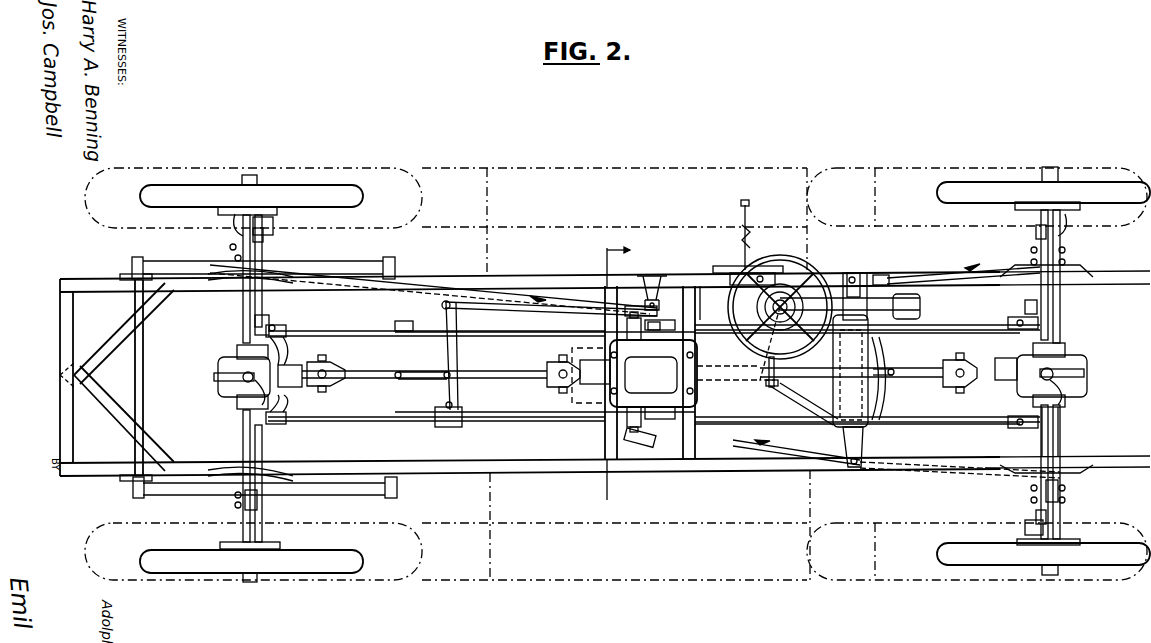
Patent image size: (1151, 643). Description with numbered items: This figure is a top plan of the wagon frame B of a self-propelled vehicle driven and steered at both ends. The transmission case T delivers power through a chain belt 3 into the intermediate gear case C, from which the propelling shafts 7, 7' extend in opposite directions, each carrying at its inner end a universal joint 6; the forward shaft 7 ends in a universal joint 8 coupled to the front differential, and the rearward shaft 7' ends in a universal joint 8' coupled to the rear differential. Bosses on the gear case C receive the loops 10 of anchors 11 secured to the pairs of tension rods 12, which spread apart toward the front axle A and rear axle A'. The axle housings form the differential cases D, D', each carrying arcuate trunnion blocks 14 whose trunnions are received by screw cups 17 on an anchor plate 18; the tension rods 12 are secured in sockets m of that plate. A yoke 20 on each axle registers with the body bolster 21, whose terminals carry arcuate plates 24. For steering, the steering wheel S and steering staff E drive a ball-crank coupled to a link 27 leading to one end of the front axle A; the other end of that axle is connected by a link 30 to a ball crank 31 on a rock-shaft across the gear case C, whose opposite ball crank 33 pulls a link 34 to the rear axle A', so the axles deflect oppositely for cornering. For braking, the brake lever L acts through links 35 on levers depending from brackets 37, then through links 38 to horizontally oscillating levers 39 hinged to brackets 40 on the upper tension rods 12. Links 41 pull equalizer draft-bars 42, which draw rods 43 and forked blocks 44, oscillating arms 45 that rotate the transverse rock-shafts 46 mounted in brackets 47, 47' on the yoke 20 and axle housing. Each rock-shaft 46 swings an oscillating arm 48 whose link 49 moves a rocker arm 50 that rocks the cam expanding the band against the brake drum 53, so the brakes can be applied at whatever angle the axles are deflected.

The brake drum 53 is at (222, 210).
The arcuate plate 24 is at (210, 478).
The depending bracket 47 is at (634, 376).
The upwardly projecting bracket 47' is at (614, 374).
The rocker arm 50 is at (274, 224).
The link 49 is at (272, 236).
The oscillating arm 48 is at (1034, 490).
The rock-shaft 46 is at (262, 252).
The yoke 20 is at (243, 503).
The rear differential case D' is at (220, 377).
The front differential case D is at (1065, 356).
The arcuate trunnion block 14 is at (225, 368).
The screw cup 17 is at (244, 370).
The anchor plate 18 is at (250, 392).
The body bolster 21 is at (243, 447).
The rear axle A' is at (209, 305).
The front axle A is at (1080, 425).
The arm 45 is at (1040, 312).
The rod 43 is at (352, 330).
The forked block 44 is at (272, 324).
The socket m is at (293, 374).
The rearwardly extending propelling shaft 7' is at (424, 383).
The universal joint 8' is at (325, 363).
The universal joint 6 is at (552, 382).
The forwardly extending propelling shaft 7 is at (820, 371).
The universal joint 8 is at (980, 363).
The intermediate gear case C is at (675, 395).
The loop 10 is at (645, 340).
The ball crank 31 is at (630, 440).
The anchor 11 is at (675, 420).
The ball crank 33 is at (625, 311).
The bracket 37 is at (652, 276).
The link 35 is at (700, 286).
The chain belt 3 is at (613, 374).
The link 34 is at (458, 290).
The link 38 is at (549, 315).
The tension rod 12 is at (720, 414).
The horizontally oscillating lever 39 is at (456, 340).
The bracket 40 is at (448, 427).
The link 41 is at (428, 380).
The equalizer draft-bar 42 is at (882, 433).
The frame B is at (460, 470).
The steering wheel S is at (808, 268).
The steering staff E is at (820, 290).
The brake lever L is at (745, 225).
The transmission case T is at (748, 338).
The link 27 is at (930, 276).
The link 30 is at (790, 450).